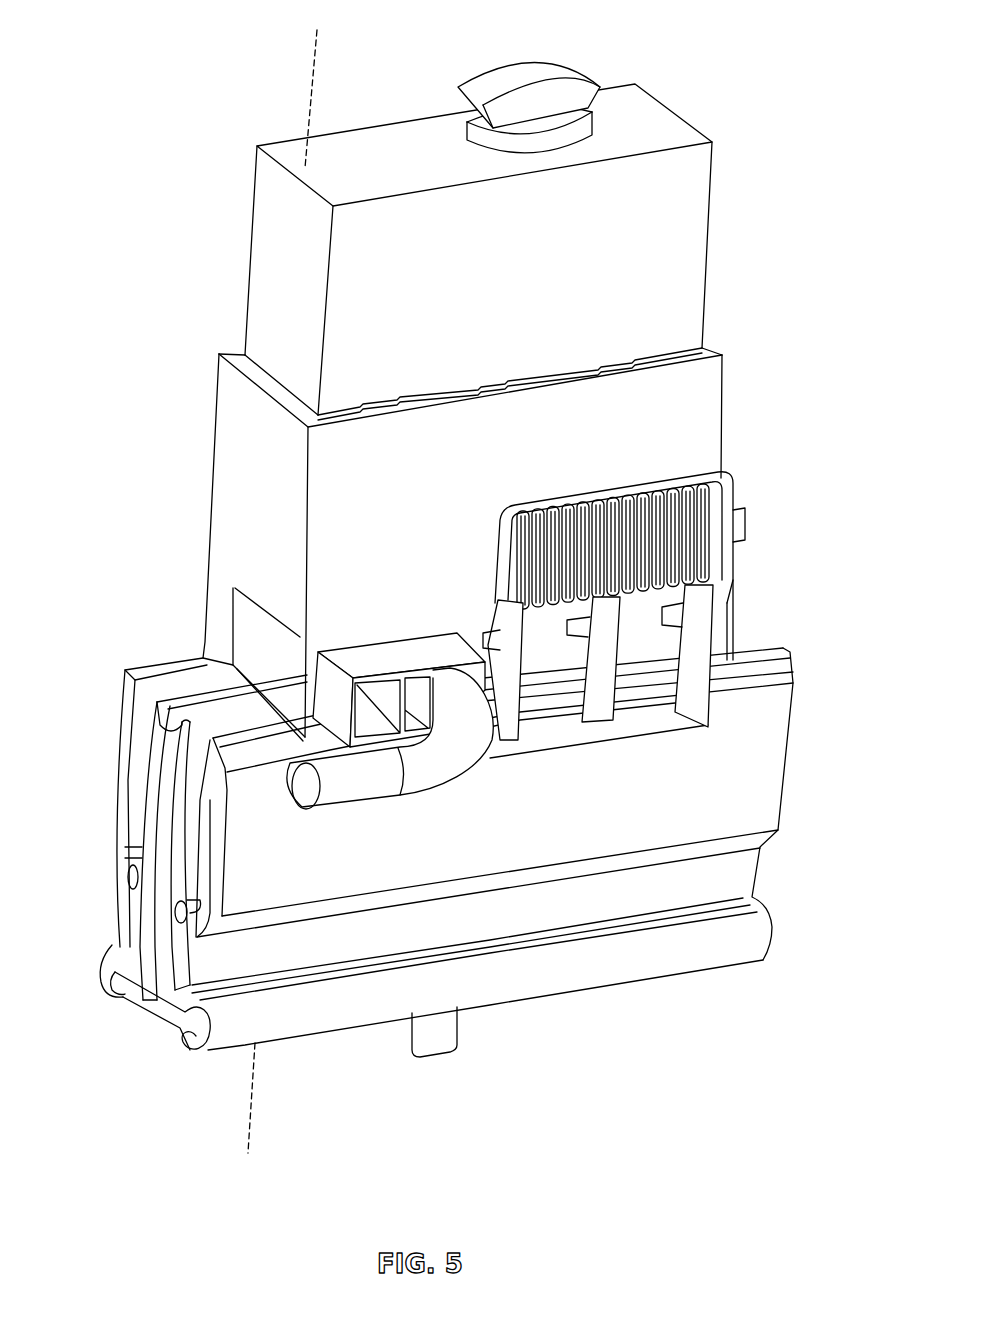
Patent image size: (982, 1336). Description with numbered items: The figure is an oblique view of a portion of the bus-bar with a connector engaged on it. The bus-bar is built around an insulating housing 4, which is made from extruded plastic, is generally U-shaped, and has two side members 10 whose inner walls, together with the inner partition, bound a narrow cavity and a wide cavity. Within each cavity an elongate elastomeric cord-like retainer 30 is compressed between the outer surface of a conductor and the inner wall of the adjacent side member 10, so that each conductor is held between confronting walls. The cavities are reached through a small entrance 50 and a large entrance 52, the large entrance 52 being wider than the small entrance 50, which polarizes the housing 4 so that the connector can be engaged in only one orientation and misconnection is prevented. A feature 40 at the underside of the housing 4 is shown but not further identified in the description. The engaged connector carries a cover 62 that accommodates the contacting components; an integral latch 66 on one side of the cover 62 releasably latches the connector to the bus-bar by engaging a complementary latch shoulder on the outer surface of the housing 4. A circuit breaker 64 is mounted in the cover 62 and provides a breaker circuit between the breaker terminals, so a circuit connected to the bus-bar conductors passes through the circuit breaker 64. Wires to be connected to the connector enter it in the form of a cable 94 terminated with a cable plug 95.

The housing 4 is at (760, 788).
The side member 10 is at (317, 30).
The retainer 30 is at (128, 878).
The foot 40 is at (432, 1058).
The small entrance 50 is at (142, 698).
The large entrance 52 is at (200, 730).
The cover 62 is at (700, 423).
The circuit breaker 64 is at (690, 235).
The latch 66 is at (700, 710).
The cable 94 is at (358, 787).
The cable plug 95 is at (387, 662).